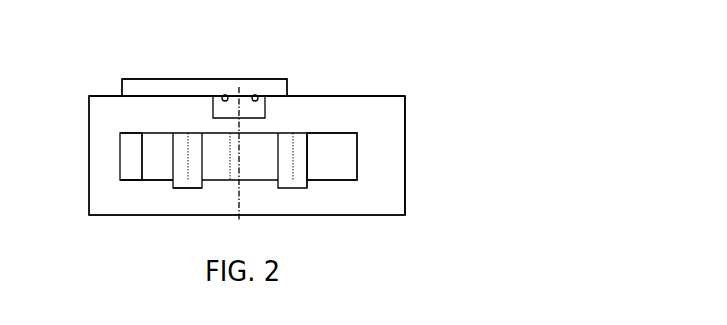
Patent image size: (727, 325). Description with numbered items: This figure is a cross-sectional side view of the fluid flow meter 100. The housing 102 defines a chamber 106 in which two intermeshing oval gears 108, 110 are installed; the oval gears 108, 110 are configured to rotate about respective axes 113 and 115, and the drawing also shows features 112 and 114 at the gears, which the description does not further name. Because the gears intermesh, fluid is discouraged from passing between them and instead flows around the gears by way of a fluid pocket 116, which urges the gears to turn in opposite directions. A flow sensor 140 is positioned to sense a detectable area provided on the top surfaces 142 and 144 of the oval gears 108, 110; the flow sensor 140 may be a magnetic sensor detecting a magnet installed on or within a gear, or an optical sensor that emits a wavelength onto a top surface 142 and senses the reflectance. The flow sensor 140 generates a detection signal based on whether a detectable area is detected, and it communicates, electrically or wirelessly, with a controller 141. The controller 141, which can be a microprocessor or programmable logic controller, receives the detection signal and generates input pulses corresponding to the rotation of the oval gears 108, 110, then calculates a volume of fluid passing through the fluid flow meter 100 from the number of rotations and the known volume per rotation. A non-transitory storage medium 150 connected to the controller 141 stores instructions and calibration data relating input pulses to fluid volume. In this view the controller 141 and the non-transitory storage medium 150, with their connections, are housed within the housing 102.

The fluid flow meter 100 is at (383, 27).
The housing 102 is at (110, 203).
The chamber 106 is at (120, 152).
The oval gear 108 is at (342, 164).
The oval gear 110 is at (152, 167).
The second connecting post 112 is at (287, 183).
The axis 113 is at (303, 166).
The first connecting post 114 is at (189, 184).
The axis 115 is at (179, 171).
The fluid pocket 116 is at (130, 143).
The flow sensor 140 is at (255, 111).
The controller 141 is at (141, 86).
The top surface 142 is at (341, 132).
The top surface 144 is at (152, 133).
The non-transitory storage medium 150 is at (204, 87).